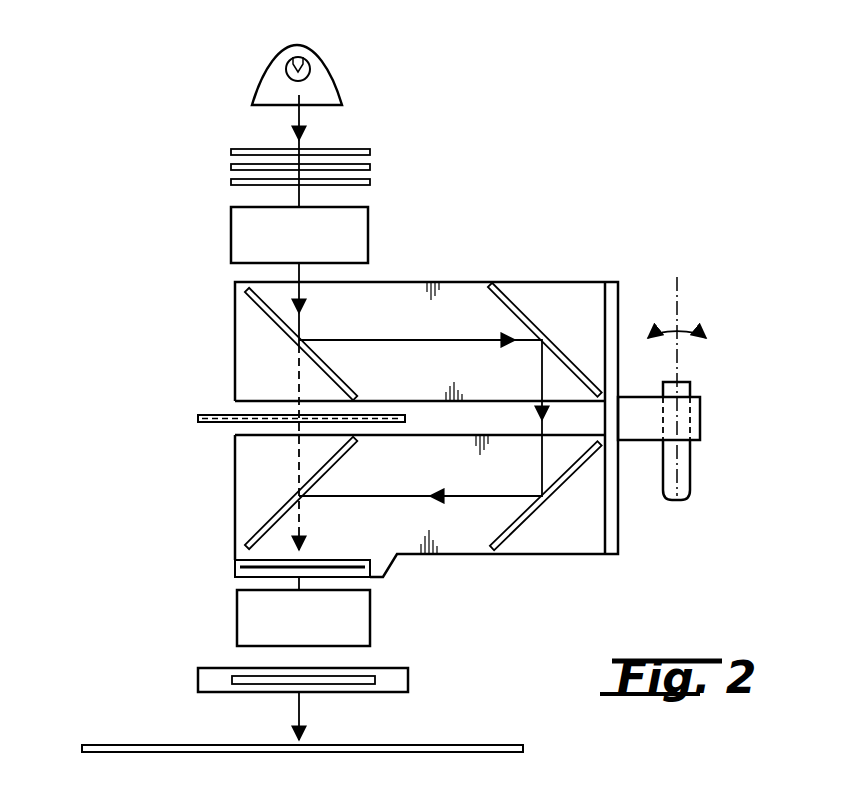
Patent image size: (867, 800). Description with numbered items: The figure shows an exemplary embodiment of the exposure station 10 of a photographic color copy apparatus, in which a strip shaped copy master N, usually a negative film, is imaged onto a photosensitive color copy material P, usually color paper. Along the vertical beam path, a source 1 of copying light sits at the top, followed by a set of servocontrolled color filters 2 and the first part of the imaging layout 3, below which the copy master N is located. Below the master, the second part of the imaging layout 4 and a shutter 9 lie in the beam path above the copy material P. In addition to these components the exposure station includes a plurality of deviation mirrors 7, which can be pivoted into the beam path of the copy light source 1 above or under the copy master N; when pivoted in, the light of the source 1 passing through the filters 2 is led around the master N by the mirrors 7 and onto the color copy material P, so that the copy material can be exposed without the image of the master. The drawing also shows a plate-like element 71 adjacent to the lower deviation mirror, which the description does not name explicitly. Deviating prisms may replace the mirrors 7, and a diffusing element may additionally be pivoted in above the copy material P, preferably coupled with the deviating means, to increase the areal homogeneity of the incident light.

The source of copying light 1 is at (311, 74).
The servocontrolled color filters 2 is at (211, 137).
The imaging layout 3 is at (252, 235).
The imaging layout 4 is at (256, 616).
The deviation mirrors 7 is at (262, 313).
The shutter 9 is at (208, 678).
The exposure station 10 is at (122, 234).
The filter plate 71 is at (365, 569).
The copy master N is at (210, 415).
The photosensitive color copy material P is at (112, 745).